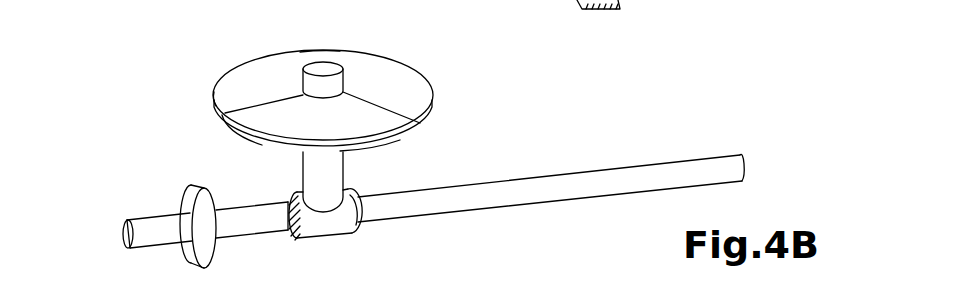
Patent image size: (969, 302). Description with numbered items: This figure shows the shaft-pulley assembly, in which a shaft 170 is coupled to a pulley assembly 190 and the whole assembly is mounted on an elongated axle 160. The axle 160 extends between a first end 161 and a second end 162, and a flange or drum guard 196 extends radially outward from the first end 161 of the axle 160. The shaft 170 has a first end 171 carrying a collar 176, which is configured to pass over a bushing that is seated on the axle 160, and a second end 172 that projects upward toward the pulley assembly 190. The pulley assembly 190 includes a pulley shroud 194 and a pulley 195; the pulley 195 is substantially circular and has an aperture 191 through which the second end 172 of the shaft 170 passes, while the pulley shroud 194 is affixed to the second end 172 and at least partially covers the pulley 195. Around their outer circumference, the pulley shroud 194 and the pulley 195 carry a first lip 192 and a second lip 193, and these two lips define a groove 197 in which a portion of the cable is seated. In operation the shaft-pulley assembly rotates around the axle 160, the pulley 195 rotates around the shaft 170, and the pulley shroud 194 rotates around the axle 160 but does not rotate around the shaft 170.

The axle 160 is at (740, 160).
The first end of the axle 161 is at (127, 220).
The second end of the axle 162 is at (742, 181).
The shaft 170 is at (327, 180).
The first end of the shaft 171 is at (338, 227).
The second end of the shaft 172 is at (300, 68).
The collar 176 is at (348, 225).
The pulley assembly 190 is at (390, 58).
The aperture 191 is at (302, 95).
The first lip 192 is at (213, 100).
The second lip 193 is at (243, 142).
The pulley shroud 194 is at (353, 117).
The pulley 195 is at (320, 50).
The flange or drum guard 196 is at (177, 197).
The groove 197 is at (370, 150).